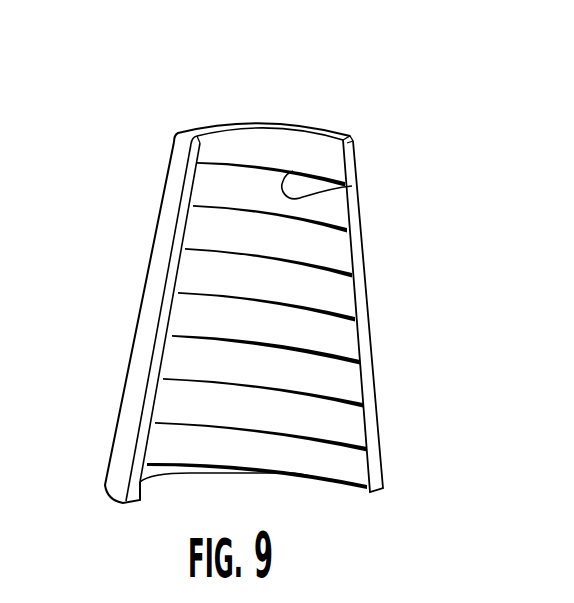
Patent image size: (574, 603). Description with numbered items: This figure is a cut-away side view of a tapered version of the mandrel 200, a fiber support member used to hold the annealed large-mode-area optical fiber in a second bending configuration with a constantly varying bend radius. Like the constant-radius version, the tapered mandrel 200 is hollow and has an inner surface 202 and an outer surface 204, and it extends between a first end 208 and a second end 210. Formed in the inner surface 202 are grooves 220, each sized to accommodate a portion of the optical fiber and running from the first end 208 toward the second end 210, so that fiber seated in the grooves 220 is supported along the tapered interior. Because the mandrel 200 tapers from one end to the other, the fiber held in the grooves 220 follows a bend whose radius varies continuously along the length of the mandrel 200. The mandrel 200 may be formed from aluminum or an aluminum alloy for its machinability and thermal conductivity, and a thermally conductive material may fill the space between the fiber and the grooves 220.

The mandrel 200 is at (132, 113).
The inner surface 202 is at (340, 420).
The outer surface 204 is at (155, 240).
The first end 208 is at (343, 488).
The second end 210 is at (328, 132).
The groove 220 is at (352, 186).